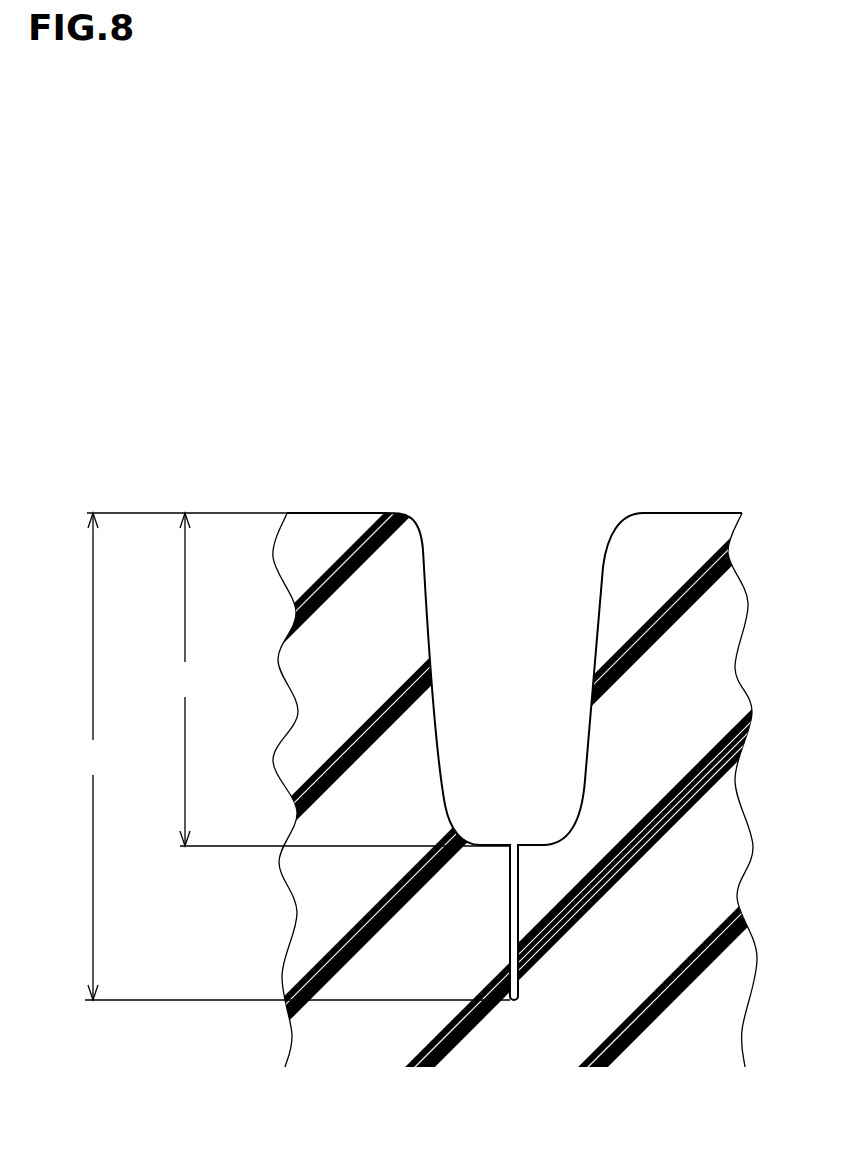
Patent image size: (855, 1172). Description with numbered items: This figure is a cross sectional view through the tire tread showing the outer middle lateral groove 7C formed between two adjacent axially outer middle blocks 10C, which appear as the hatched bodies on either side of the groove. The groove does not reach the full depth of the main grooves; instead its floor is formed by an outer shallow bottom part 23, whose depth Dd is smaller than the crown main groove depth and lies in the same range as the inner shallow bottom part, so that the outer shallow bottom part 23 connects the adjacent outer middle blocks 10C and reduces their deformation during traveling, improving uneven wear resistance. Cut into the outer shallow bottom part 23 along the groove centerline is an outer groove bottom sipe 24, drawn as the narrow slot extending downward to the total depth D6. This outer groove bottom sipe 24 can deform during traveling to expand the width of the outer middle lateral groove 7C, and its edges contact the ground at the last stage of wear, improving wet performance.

The outer middle block 10C is at (347, 508).
The outer middle lateral groove 7C is at (507, 520).
The outer shallow bottom part 23 is at (489, 845).
The outer groove bottom sipe 24 is at (517, 913).
The depth of outer shallow bottom part Dd is at (298, 679).
The depth of outer groove bottom sipe D6 is at (291, 756).